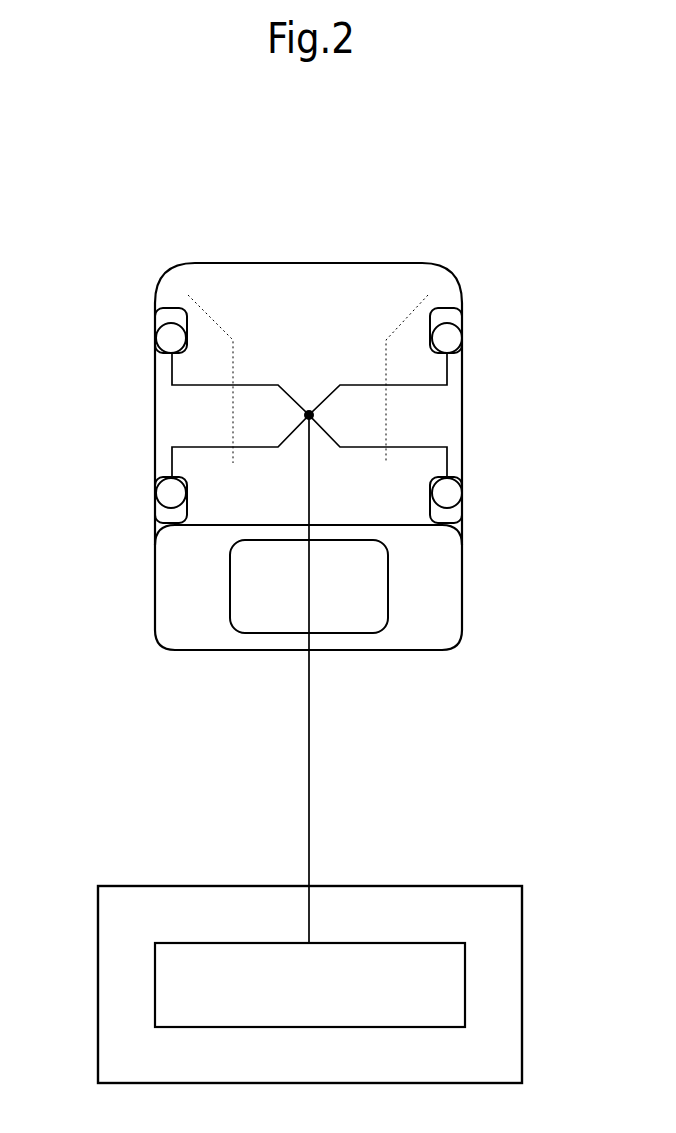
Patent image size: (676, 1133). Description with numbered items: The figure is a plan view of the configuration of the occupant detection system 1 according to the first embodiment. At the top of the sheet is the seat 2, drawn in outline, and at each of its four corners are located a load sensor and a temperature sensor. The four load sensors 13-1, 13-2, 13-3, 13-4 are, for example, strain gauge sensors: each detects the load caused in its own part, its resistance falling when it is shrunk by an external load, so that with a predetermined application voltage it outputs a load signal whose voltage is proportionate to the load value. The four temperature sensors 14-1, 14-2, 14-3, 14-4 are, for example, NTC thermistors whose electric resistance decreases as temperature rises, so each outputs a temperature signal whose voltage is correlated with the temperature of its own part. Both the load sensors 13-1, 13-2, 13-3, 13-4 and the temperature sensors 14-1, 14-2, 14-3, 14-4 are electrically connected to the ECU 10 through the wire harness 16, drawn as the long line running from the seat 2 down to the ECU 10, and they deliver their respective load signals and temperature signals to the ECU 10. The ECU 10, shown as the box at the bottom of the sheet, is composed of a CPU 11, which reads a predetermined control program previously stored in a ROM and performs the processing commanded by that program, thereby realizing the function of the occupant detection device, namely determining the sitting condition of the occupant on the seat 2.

The occupant detection system 1 is at (152, 178).
The seat 2 is at (340, 263).
The ECU 10 is at (470, 886).
The CPU 11 is at (425, 943).
The load sensor 13-1 is at (155, 315).
The load sensor 13-2 is at (155, 518).
The load sensor 13-3 is at (462, 315).
The load sensor 13-4 is at (462, 490).
The temperature sensor 14-1 is at (158, 340).
The temperature sensor 14-2 is at (156, 493).
The temperature sensor 14-3 is at (460, 340).
The temperature sensor 14-4 is at (462, 518).
The wire harness 16 is at (310, 777).